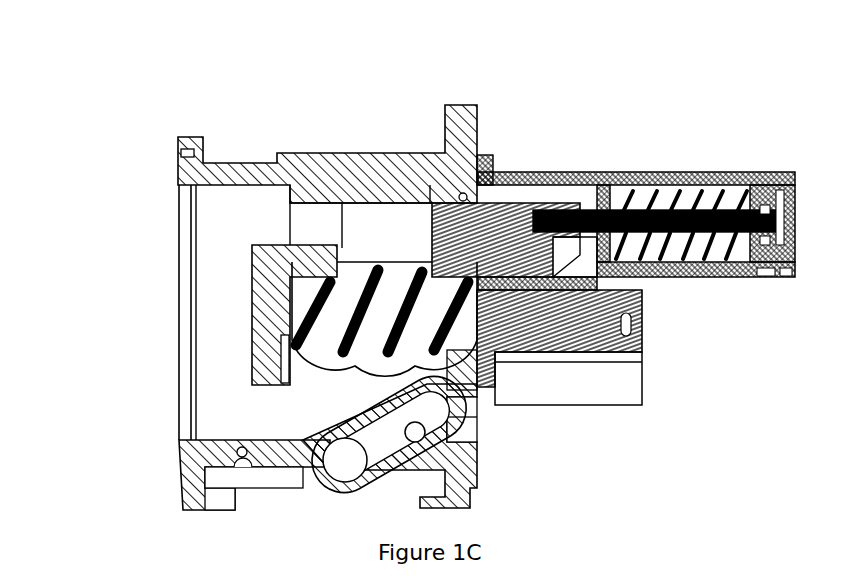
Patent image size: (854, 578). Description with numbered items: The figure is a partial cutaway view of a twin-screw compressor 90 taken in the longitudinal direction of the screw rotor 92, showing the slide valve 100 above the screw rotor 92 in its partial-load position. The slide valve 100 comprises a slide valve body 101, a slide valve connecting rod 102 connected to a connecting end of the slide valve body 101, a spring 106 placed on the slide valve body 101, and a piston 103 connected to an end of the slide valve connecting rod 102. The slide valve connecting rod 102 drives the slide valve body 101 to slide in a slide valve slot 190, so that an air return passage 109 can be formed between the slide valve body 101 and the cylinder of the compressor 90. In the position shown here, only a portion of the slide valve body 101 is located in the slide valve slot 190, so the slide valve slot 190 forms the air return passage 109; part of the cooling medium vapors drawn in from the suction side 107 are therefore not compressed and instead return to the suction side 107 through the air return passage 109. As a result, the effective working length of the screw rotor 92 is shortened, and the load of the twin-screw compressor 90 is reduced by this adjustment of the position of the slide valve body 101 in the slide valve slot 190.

The twin-screw compressor 90 is at (126, 106).
The screw rotor 92 is at (376, 352).
The slide valve 100 is at (558, 279).
The slide valve body 101 is at (512, 225).
The slide valve connecting rod 102 is at (606, 178).
The piston 103 is at (775, 175).
The spring 106 is at (658, 195).
The suction side 107 is at (218, 327).
The air return passage 109 is at (385, 232).
The slide valve slot 190 is at (422, 198).